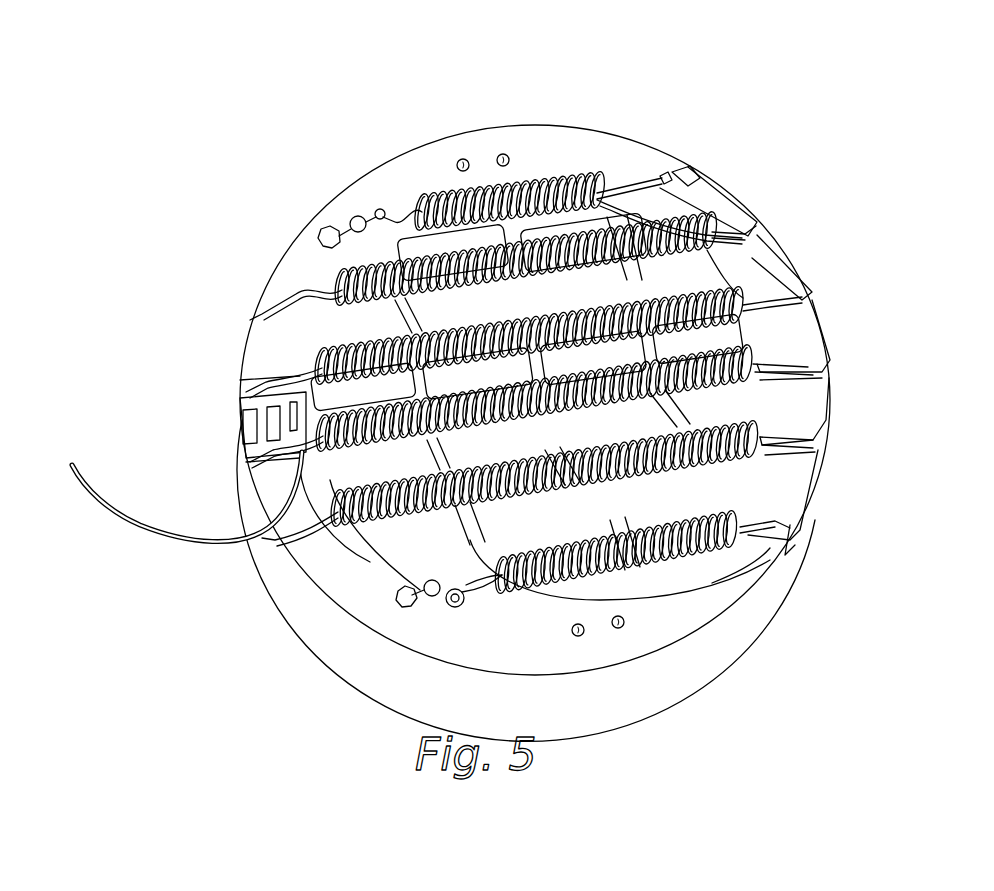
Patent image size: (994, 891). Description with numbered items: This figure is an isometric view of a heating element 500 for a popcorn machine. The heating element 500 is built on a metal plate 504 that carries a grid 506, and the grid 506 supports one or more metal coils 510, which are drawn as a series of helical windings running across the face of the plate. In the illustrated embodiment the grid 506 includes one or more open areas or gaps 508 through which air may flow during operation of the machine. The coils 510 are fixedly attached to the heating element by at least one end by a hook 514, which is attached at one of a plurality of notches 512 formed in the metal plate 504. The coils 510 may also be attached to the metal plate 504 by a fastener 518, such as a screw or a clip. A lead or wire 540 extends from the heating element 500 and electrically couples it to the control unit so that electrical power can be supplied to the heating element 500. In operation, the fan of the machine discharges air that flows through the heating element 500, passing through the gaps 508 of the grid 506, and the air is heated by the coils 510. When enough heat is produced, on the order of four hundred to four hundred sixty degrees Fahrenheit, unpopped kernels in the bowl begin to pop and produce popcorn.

The heating element 500 is at (380, 70).
The metal plate 504 is at (480, 146).
The grid 506 is at (700, 500).
The open areas or gaps 508 is at (740, 410).
The metal coils 510 is at (586, 176).
The notches 512 is at (650, 176).
The hook 514 is at (690, 166).
The fastener 518 is at (326, 232).
The lead or wire 540 is at (236, 548).